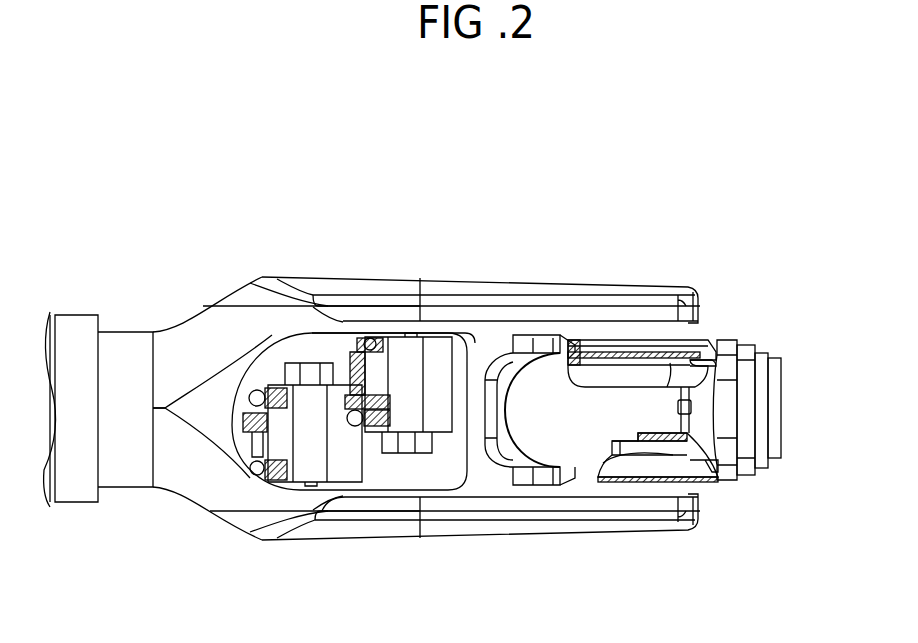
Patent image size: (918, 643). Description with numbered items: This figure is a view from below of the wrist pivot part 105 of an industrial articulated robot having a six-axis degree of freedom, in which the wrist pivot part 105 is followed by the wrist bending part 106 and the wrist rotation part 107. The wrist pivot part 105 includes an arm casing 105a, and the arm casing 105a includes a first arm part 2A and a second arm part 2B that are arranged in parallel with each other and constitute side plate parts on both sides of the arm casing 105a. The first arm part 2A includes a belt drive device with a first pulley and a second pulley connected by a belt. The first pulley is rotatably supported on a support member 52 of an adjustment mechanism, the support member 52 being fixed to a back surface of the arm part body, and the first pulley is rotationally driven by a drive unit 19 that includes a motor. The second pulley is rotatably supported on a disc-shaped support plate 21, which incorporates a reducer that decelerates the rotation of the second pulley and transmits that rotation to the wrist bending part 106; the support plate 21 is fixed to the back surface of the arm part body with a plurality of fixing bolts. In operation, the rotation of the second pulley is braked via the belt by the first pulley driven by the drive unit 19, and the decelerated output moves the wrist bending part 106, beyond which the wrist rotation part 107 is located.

The support member 52 is at (282, 343).
The wrist pivot part 105 is at (548, 262).
The arm casing 105a is at (362, 262).
The first arm part 2A is at (443, 278).
The second arm part 2B is at (498, 536).
The drive unit 19 is at (436, 355).
The wrist bending part 106 is at (620, 375).
The support plate 21 is at (707, 342).
The wrist rotation part 107 is at (758, 475).